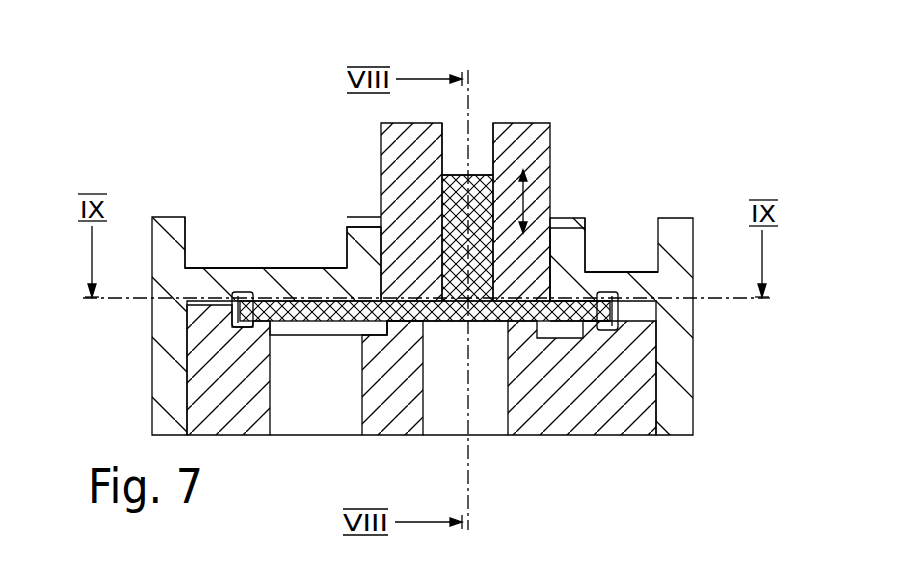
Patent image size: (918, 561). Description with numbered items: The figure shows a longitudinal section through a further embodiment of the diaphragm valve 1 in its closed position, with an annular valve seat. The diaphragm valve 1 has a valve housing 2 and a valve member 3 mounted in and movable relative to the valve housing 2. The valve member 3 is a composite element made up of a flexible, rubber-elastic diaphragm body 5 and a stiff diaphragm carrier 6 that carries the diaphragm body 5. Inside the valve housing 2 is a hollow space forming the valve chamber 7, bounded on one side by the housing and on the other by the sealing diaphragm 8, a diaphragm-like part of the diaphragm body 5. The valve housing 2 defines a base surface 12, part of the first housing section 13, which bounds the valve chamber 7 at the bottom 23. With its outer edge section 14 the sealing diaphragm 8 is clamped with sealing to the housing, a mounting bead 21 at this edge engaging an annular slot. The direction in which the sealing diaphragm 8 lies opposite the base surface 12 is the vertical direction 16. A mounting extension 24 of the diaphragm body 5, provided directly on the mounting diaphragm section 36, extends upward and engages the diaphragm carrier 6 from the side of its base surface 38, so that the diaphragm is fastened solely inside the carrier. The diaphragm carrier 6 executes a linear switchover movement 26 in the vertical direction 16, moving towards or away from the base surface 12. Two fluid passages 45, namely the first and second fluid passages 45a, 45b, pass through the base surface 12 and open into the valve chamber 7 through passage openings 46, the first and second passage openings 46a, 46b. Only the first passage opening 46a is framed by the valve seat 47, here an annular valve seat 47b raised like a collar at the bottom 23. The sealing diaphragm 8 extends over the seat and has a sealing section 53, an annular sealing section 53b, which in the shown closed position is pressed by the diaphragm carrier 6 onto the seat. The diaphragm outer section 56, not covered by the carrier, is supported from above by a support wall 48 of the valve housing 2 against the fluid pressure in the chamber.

The diaphragm valve 1 is at (724, 156).
The valve housing 2 is at (393, 327).
The valve member 3 is at (483, 179).
The diaphragm body 5 is at (497, 185).
The diaphragm carrier 6 is at (535, 145).
The valve chamber 7 is at (330, 340).
The sealing diaphragm 8 is at (352, 292).
The base surface 12 is at (621, 358).
The first housing section 13 is at (624, 418).
The outer edge section 14 is at (670, 327).
The vertical direction 16 is at (468, 100).
The mounting bead 21 is at (625, 316).
The bottom 23 is at (615, 340).
The mounting extension 24 is at (479, 190).
The switchover movement 26 is at (548, 160).
The mounting diaphragm section 36 is at (475, 313).
The base surface of the diaphragm carrier 38 is at (400, 328).
The fluid passage 45 is at (421, 404).
The first fluid passage 45a is at (489, 420).
The second fluid passage 45b is at (300, 398).
The passage opening 46 is at (341, 344).
The first passage opening 46a is at (530, 338).
The second passage opening 46b is at (250, 328).
The valve seat 47 is at (515, 275).
The annular valve seat 47b is at (415, 302).
The support wall 48 is at (292, 283).
The sealing section 53 is at (588, 240).
The annular sealing section 53b is at (515, 300).
The diaphragm outer section 56 is at (322, 297).